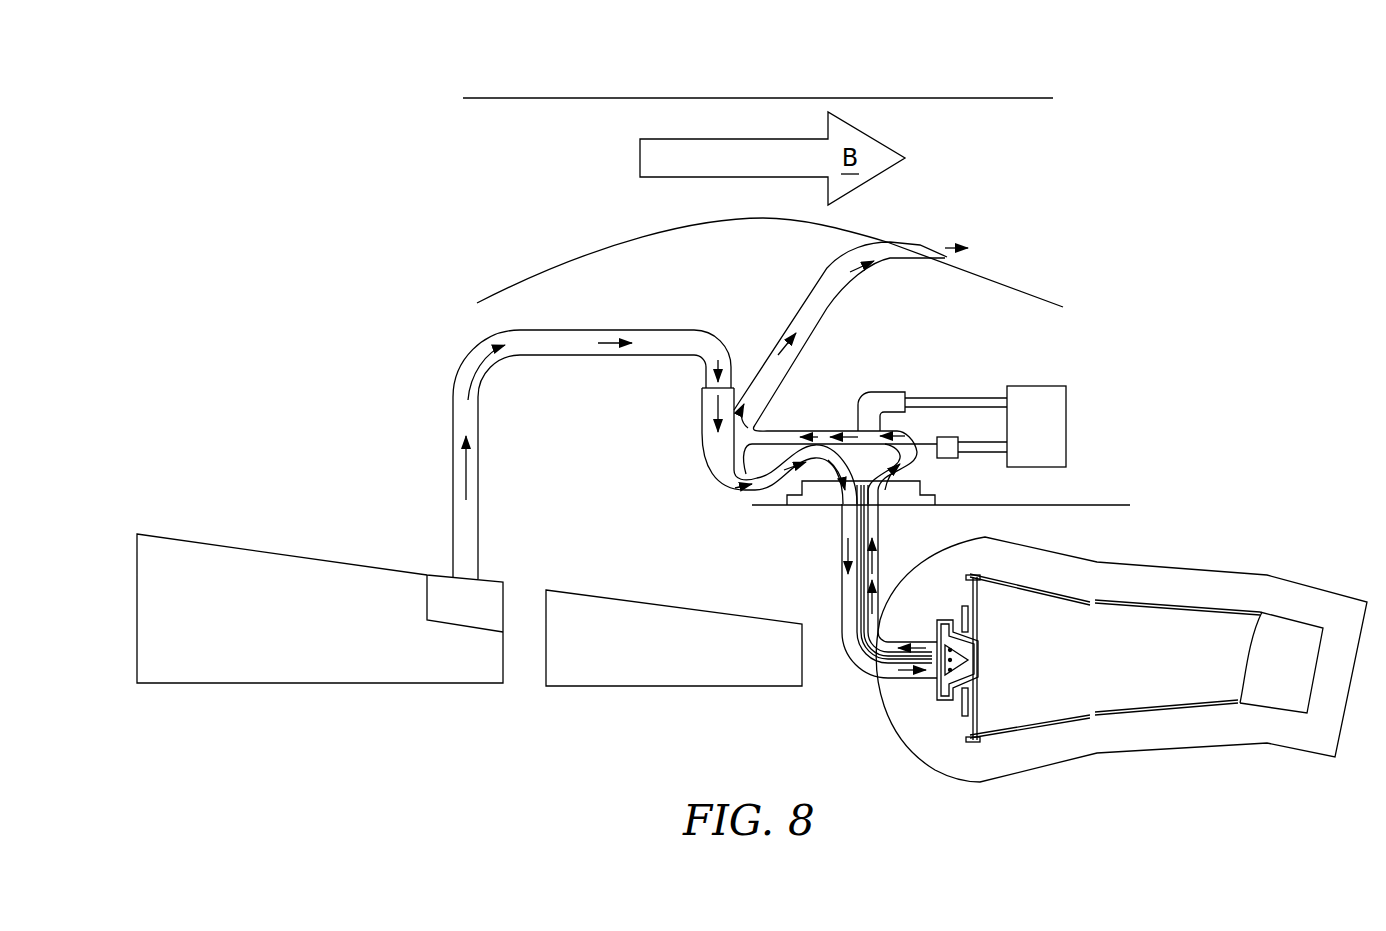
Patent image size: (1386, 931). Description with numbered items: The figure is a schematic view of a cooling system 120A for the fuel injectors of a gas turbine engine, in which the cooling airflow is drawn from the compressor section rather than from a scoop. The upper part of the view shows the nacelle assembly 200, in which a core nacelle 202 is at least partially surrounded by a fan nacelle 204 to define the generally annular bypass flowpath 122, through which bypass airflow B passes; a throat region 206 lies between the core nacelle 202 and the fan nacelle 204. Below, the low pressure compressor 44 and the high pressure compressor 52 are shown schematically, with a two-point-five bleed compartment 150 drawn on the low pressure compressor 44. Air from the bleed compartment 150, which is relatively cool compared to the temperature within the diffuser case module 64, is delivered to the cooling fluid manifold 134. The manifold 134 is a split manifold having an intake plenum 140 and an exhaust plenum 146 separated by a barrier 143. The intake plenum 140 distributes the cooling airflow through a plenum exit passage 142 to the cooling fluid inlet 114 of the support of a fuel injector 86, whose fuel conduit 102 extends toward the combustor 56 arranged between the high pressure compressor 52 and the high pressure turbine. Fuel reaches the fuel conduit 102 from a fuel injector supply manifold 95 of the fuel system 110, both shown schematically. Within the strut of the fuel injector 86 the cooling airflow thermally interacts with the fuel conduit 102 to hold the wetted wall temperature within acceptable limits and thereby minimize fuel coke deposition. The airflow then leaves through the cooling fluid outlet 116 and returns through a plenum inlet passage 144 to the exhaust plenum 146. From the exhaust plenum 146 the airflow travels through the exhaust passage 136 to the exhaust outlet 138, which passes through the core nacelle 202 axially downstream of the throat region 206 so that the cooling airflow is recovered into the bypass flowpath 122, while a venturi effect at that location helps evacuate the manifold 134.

The nacelle assembly 200 is at (856, 78).
The fan nacelle 204 is at (993, 97).
The bypass flowpath 122 is at (565, 176).
The cooling system 120A is at (1242, 150).
The throat region 206 is at (768, 218).
The core nacelle 202 is at (1047, 295).
The exhaust passage 136 is at (825, 322).
The exhaust outlet 138 is at (896, 247).
The cooling fluid manifold 134 is at (697, 444).
The intake plenum 140 is at (713, 430).
The barrier 143 is at (728, 445).
The plenum exit passage 142 is at (730, 488).
The exhaust plenum 146 is at (758, 425).
The plenum inlet passage 144 is at (845, 428).
The fuel injector supply manifold 95 is at (978, 444).
The fuel system 110 is at (1015, 440).
The cooling fluid outlet 116 is at (922, 471).
The cooling fluid inlet 114 is at (828, 492).
The diffuser case module 64 is at (1113, 505).
The fuel injector 86 is at (890, 560).
The fuel conduit 102 is at (860, 585).
The combustor 56 is at (1180, 556).
The low pressure compressor 44 is at (292, 636).
The 2.5 bleed compartment 150 is at (486, 614).
The high pressure compressor 52 is at (637, 656).